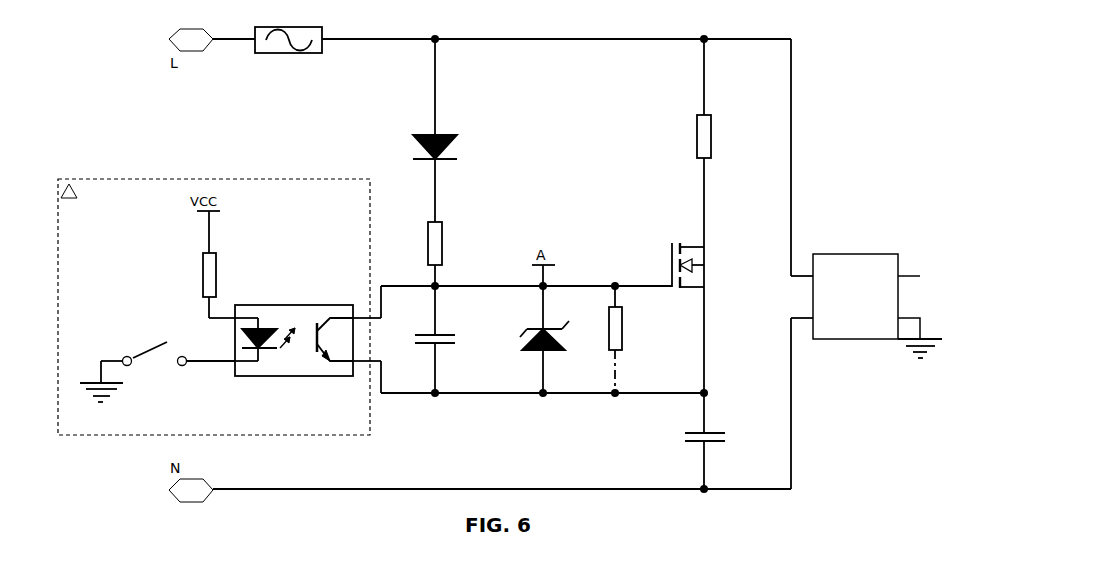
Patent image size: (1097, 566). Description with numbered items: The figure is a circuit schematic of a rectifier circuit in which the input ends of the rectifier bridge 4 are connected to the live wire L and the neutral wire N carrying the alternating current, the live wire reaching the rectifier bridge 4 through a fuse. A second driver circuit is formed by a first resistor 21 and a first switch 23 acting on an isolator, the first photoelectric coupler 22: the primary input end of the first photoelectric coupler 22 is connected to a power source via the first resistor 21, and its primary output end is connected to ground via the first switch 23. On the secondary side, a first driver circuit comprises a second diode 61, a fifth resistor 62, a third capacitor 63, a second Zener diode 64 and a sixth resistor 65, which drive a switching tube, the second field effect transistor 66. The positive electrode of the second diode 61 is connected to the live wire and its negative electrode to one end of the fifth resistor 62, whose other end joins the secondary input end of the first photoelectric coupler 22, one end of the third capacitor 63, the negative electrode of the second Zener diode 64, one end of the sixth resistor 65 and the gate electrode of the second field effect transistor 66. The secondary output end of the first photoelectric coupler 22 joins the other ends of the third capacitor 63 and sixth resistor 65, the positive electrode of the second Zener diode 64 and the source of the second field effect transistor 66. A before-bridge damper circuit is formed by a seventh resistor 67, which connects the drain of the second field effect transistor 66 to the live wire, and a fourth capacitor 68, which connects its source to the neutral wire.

The rectifier bridge 4 is at (847, 252).
The first resistor 21 is at (221, 264).
The first photoelectric coupler 22 is at (294, 332).
The first switch 23 is at (157, 375).
The second diode 61 is at (446, 130).
The fifth resistor 62 is at (446, 254).
The third capacitor 63 is at (447, 339).
The second Zener diode 64 is at (550, 339).
The sixth resistor 65 is at (626, 339).
The second field effect transistor 66 is at (700, 318).
The seventh resistor 67 is at (716, 143).
The fourth capacitor 68 is at (716, 441).